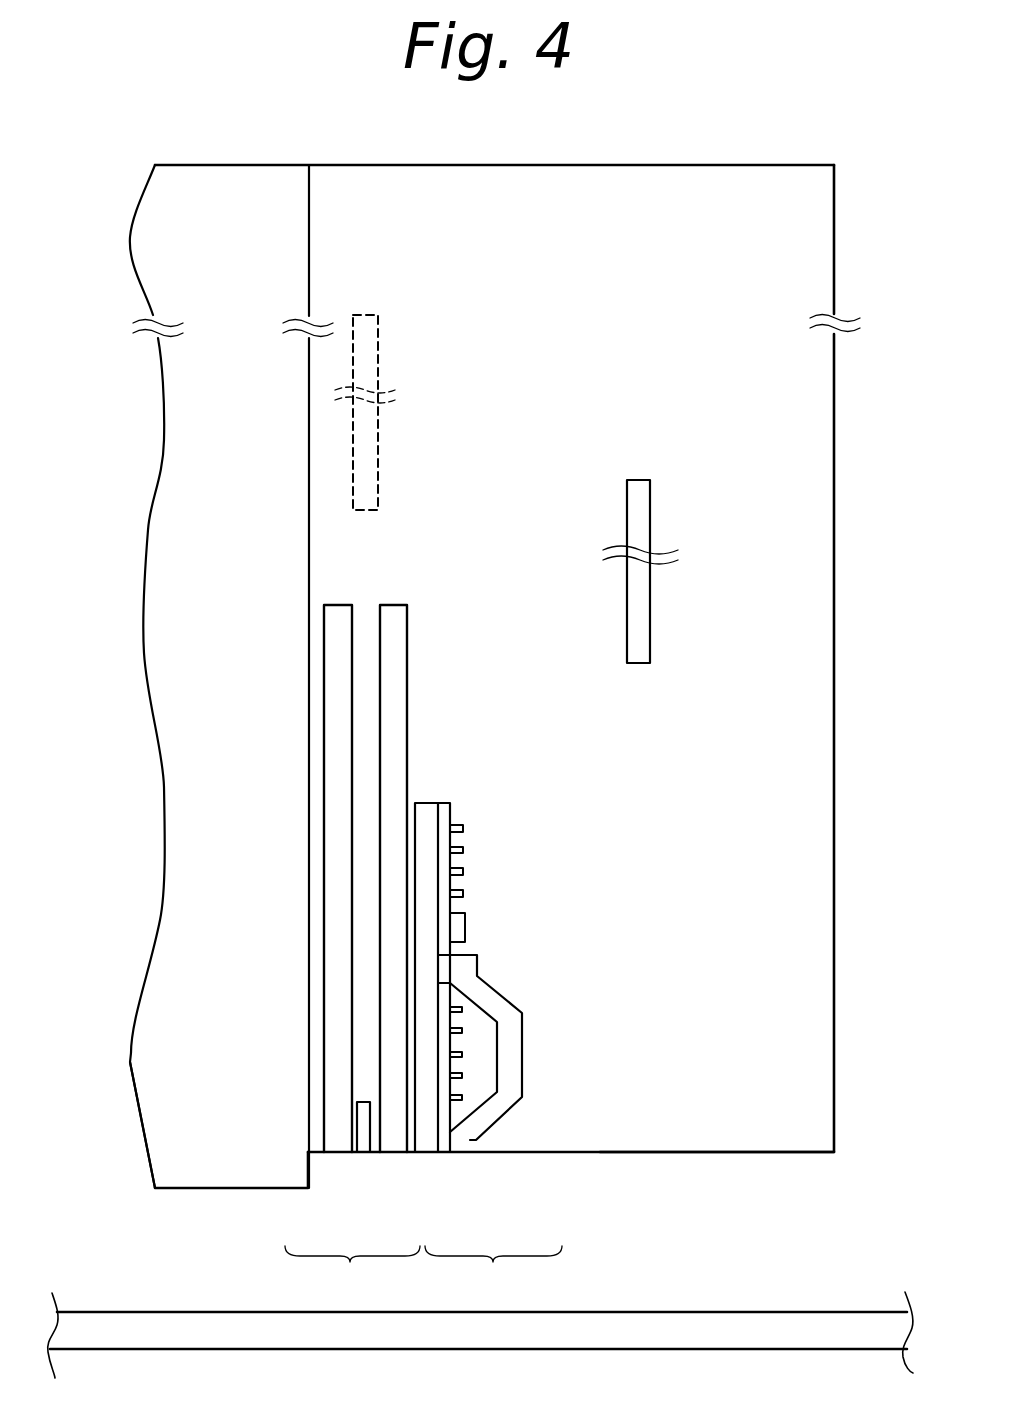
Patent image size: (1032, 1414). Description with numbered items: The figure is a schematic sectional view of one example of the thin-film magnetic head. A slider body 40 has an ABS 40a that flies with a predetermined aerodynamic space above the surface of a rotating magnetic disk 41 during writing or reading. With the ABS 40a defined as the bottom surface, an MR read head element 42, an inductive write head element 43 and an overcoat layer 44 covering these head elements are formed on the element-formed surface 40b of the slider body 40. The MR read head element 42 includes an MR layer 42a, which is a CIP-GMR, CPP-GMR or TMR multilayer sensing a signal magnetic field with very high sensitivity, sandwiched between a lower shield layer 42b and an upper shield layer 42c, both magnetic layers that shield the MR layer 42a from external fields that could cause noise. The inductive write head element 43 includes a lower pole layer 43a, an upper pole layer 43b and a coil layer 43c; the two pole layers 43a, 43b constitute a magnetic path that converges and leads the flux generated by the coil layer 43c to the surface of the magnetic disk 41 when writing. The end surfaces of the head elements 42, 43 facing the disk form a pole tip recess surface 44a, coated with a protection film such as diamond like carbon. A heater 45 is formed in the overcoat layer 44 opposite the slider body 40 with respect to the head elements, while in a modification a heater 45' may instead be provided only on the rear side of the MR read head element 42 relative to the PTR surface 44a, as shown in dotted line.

The slider body 40 is at (260, 1162).
The ABS 40a is at (183, 1192).
The element-formed surface 40b is at (309, 448).
The magnetic disk 41 is at (742, 1310).
The MR read head element 42 is at (352, 1274).
The MR layer 42a is at (367, 1153).
The lower shield layer 42b is at (343, 1153).
The upper shield layer 42c is at (395, 1153).
The inductive write head element 43 is at (493, 1274).
The lower pole layer 43a is at (427, 1153).
The upper pole layer 43b is at (483, 1120).
The coil layer 43c is at (457, 1100).
The overcoat layer 44 is at (720, 195).
The pole tip recess surface 44a is at (641, 1152).
The heater 45 is at (761, 571).
The heater 45' is at (422, 412).